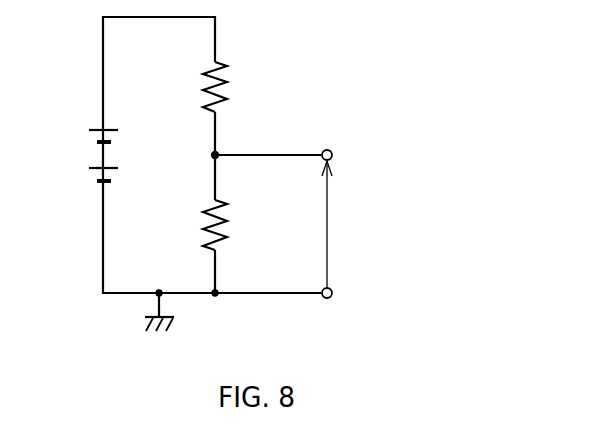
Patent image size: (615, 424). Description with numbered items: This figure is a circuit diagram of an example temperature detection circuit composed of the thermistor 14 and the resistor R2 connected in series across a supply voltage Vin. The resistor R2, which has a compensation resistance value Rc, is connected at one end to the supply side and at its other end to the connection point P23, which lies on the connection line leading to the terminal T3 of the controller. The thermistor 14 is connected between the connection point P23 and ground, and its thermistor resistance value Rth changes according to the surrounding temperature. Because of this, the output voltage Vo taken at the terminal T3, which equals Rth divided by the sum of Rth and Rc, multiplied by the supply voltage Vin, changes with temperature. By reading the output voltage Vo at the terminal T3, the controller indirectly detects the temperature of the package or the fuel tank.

The resistor R2 is at (234, 88).
The connection point P23 is at (219, 152).
The terminal T3 is at (333, 155).
The thermistor 14 is at (233, 228).
The supply voltage Vin is at (75, 132).
The output voltage Vo is at (338, 224).